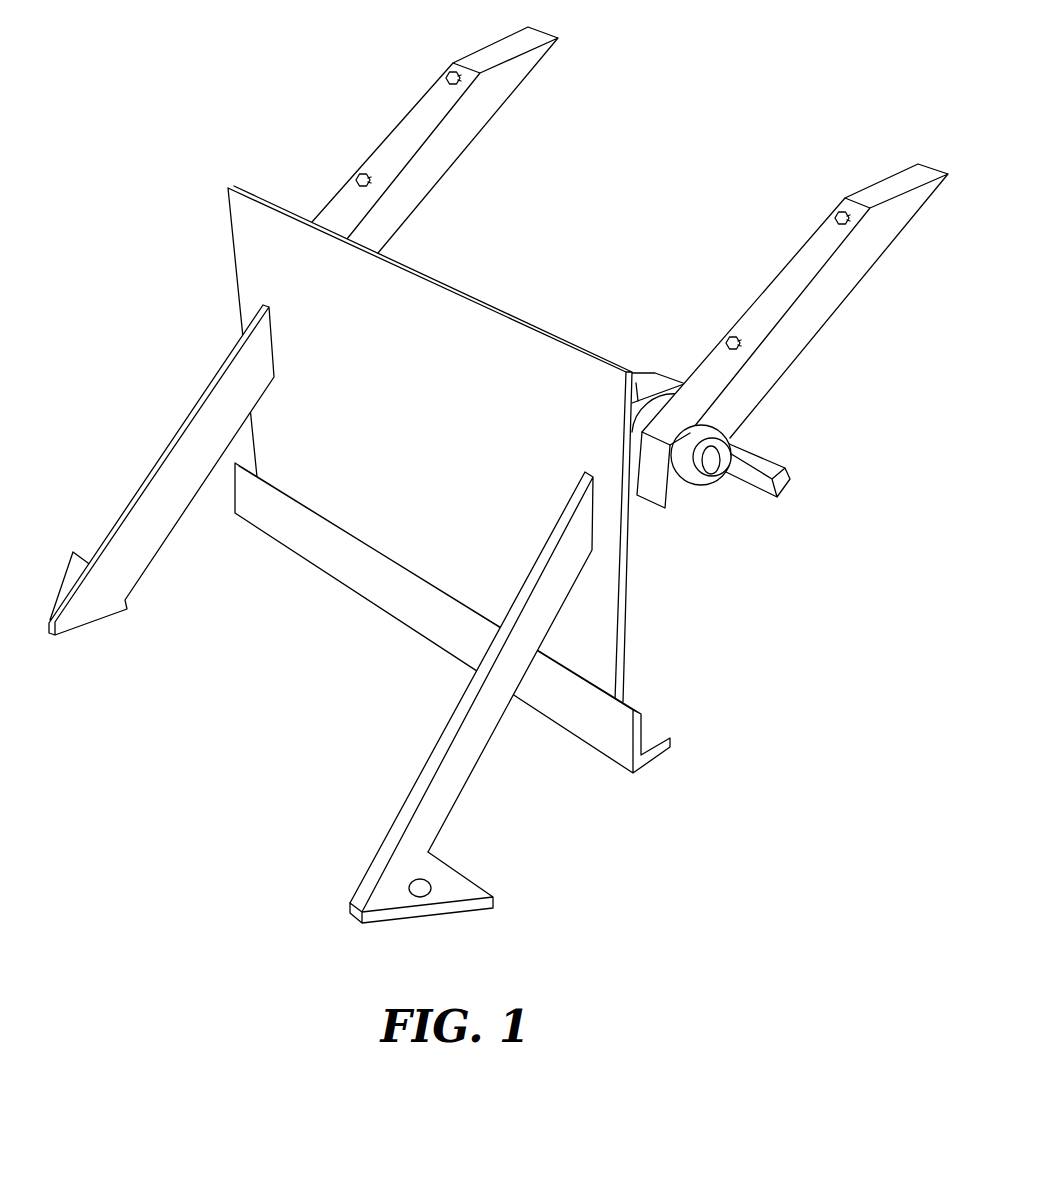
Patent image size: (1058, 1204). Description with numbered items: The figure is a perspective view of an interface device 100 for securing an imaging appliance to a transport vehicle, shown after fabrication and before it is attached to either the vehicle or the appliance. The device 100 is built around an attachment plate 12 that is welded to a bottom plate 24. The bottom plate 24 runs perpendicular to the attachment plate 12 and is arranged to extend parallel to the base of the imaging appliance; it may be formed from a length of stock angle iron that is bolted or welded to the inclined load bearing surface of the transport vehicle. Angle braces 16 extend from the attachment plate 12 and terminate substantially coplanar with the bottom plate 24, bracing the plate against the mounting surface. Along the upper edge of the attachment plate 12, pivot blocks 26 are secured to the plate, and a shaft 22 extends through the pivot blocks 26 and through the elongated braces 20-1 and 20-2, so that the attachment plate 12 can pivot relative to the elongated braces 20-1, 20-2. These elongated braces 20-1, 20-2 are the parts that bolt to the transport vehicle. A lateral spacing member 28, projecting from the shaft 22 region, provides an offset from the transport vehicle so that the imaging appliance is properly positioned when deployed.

The interface device 100 is at (209, 745).
The attachment plate 12 is at (262, 268).
The angle braces 16 is at (188, 415).
The elongated brace 20-1 is at (818, 227).
The elongated brace 20-2 is at (467, 129).
The shaft 22 is at (712, 476).
The bottom plate 24 is at (658, 757).
The pivot blocks 26 is at (650, 378).
The lateral spacing member 28 is at (788, 484).